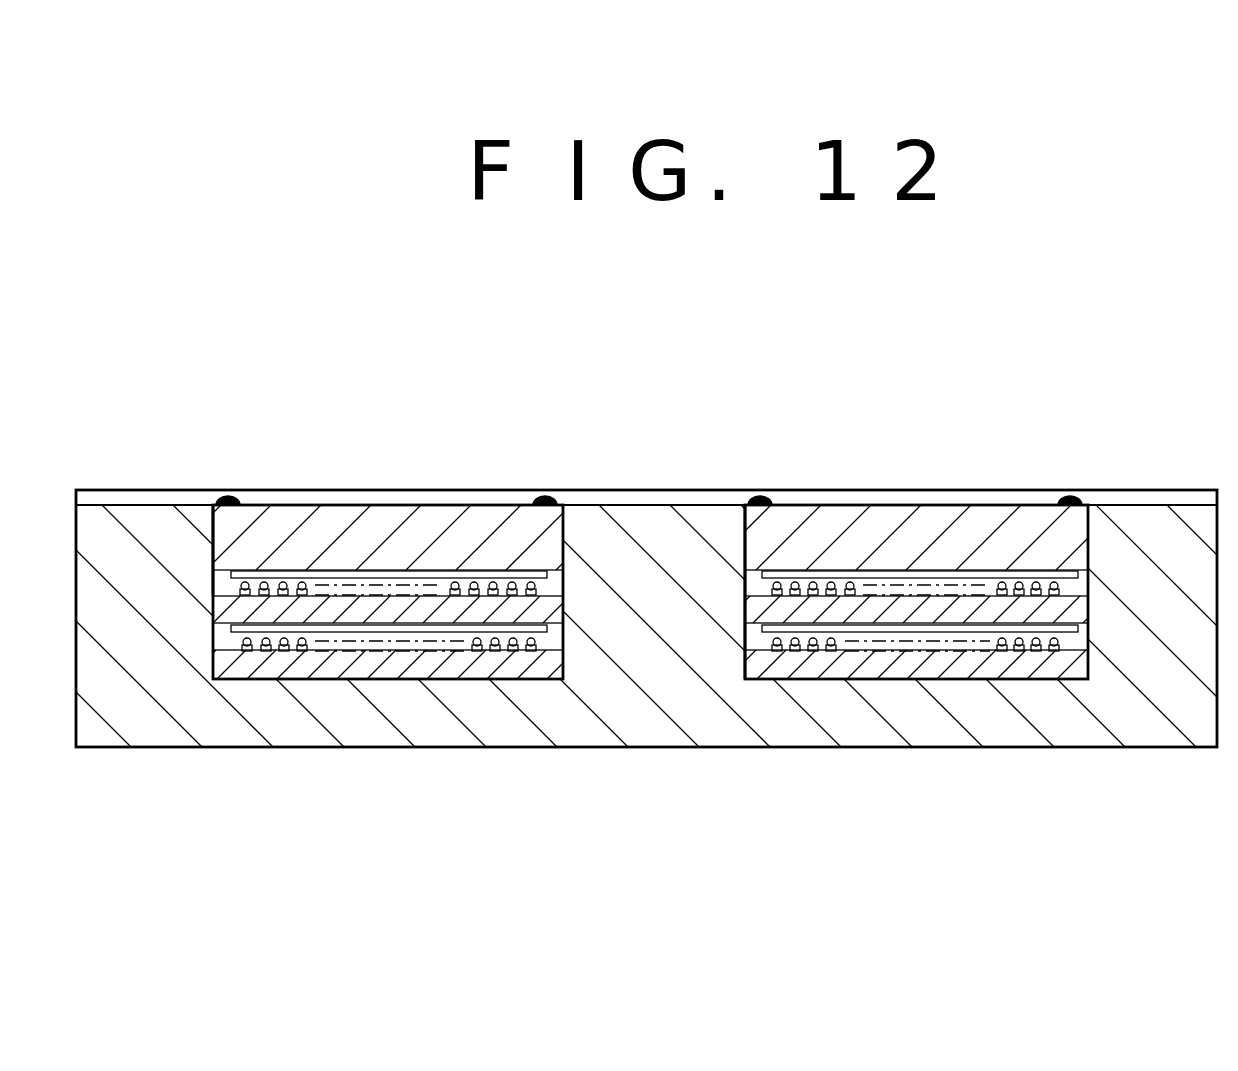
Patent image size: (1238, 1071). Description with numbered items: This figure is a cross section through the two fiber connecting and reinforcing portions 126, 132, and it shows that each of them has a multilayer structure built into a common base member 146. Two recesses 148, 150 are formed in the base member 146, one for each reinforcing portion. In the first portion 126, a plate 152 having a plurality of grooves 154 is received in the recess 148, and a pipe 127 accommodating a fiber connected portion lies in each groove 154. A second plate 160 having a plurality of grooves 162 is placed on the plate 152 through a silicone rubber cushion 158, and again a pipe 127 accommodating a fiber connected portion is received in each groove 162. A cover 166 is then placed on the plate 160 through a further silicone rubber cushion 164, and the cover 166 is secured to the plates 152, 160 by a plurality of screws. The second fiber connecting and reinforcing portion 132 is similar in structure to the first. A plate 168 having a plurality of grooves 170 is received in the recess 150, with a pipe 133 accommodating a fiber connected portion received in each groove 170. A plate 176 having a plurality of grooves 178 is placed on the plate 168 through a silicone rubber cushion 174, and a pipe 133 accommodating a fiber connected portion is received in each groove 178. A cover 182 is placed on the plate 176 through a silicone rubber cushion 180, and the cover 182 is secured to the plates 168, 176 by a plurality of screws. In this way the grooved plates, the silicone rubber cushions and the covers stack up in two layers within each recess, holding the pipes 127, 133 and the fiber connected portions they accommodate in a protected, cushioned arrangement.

The fiber connecting and reinforcing portion 126 is at (948, 490).
The pipe 127 is at (872, 580).
The fiber connecting and reinforcing portion 132 is at (413, 490).
The pipe 133 is at (317, 577).
The base member 146 is at (653, 727).
The recess 148 is at (1087, 533).
The recess 150 is at (217, 543).
The plate 152 is at (907, 672).
The grooves 154 is at (1047, 600).
The silicone rubber cushion 158 is at (933, 632).
The plate 160 is at (743, 590).
The grooves 162 is at (991, 590).
The silicone rubber cushion 164 is at (838, 570).
The cover 166 is at (782, 520).
The plate 168 is at (382, 672).
The grooves 170 is at (240, 645).
The silicone rubber cushion 174 is at (422, 630).
The plate 176 is at (205, 607).
The grooves 178 is at (212, 563).
The silicone rubber cushion 180 is at (468, 570).
The cover 182 is at (515, 510).